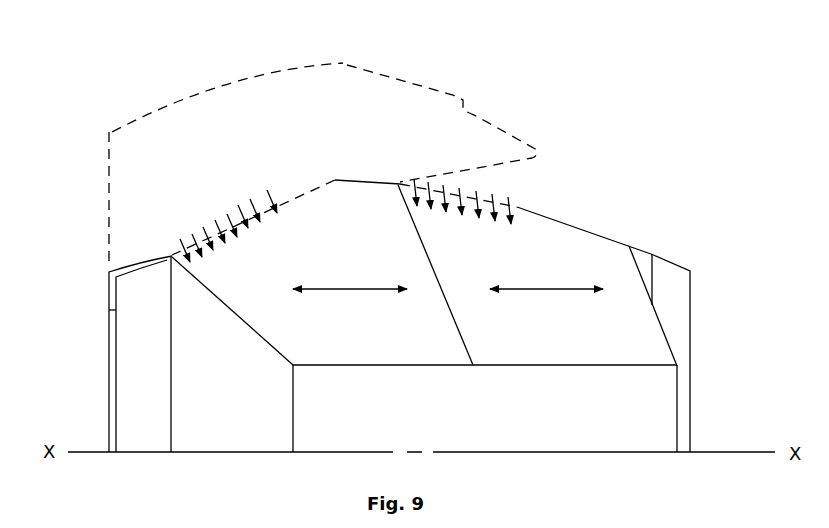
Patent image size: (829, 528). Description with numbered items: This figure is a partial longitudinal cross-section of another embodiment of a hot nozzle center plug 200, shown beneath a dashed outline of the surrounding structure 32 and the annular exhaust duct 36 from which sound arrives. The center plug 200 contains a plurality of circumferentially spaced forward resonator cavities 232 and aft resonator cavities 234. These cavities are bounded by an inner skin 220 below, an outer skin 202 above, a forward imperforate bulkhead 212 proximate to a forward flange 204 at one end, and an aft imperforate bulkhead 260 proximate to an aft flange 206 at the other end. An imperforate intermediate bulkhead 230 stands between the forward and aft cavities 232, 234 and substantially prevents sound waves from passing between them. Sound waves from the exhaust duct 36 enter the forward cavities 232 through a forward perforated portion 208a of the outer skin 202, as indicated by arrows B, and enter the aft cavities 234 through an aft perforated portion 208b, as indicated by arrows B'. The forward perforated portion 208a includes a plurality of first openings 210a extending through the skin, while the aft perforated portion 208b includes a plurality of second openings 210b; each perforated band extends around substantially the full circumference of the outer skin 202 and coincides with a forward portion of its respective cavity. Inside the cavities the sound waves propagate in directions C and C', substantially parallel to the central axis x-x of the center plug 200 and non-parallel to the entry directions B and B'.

The turbine blade 32 is at (345, 62).
The annular exhaust duct 36 is at (320, 112).
The hot nozzle center plug 200 is at (613, 172).
The outer skin 202 is at (320, 182).
The forward flange 204 is at (108, 283).
The aft flange 206 is at (675, 265).
The forward perforated portion 208a is at (193, 250).
The aft perforated portion 208b is at (460, 208).
The first openings 210a is at (228, 228).
The second openings 210b is at (513, 198).
The forward imperforate bulkhead 212 is at (263, 340).
The inner skin 220 is at (565, 367).
The imperforate intermediate bulkhead 230 is at (450, 322).
The forward resonator cavities 232 is at (360, 240).
The aft resonator cavities 234 is at (570, 339).
The aft imperforate bulkhead 260 is at (662, 328).